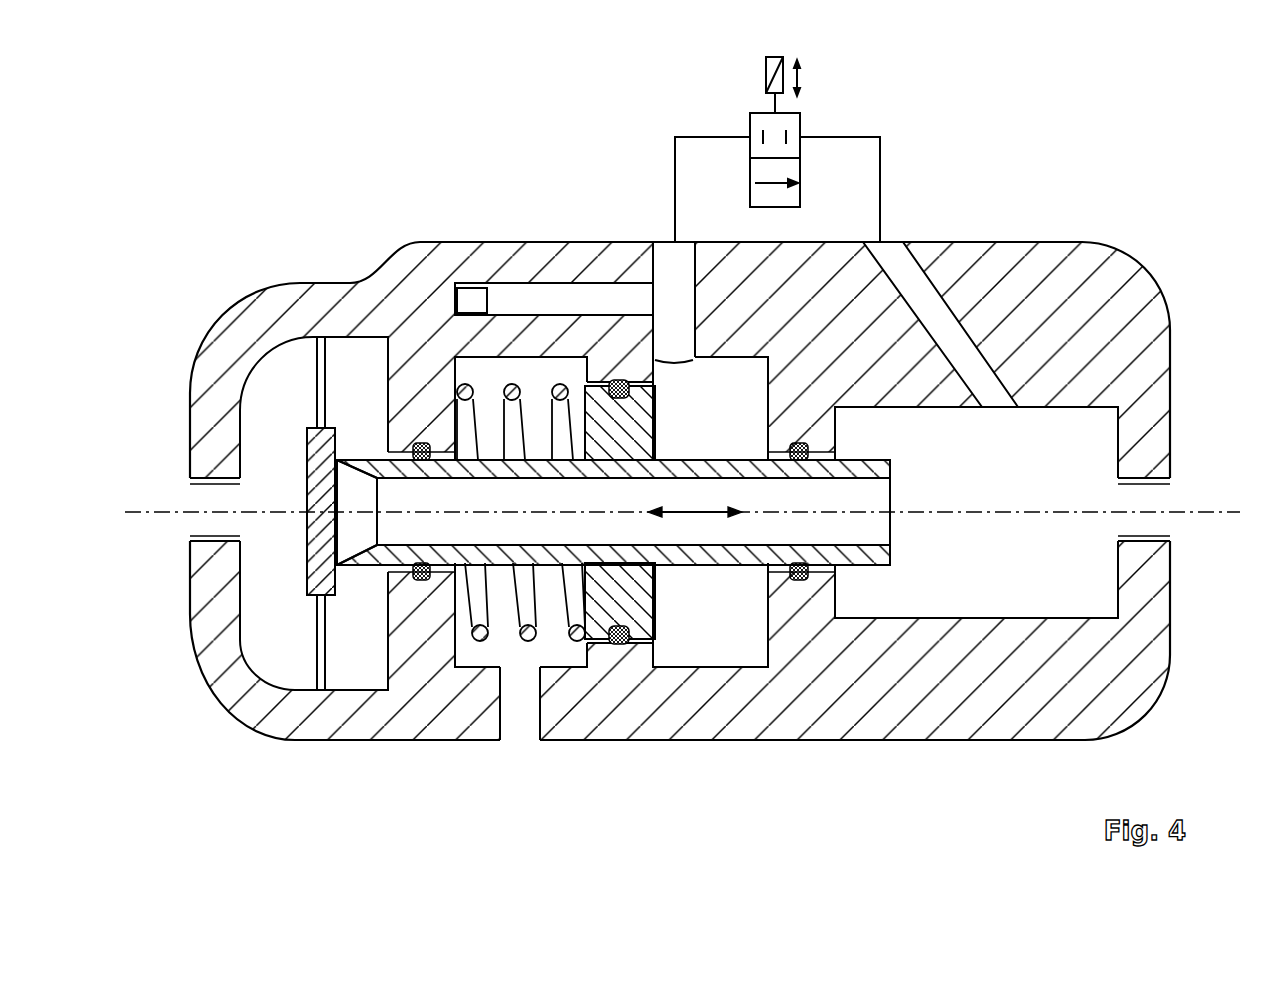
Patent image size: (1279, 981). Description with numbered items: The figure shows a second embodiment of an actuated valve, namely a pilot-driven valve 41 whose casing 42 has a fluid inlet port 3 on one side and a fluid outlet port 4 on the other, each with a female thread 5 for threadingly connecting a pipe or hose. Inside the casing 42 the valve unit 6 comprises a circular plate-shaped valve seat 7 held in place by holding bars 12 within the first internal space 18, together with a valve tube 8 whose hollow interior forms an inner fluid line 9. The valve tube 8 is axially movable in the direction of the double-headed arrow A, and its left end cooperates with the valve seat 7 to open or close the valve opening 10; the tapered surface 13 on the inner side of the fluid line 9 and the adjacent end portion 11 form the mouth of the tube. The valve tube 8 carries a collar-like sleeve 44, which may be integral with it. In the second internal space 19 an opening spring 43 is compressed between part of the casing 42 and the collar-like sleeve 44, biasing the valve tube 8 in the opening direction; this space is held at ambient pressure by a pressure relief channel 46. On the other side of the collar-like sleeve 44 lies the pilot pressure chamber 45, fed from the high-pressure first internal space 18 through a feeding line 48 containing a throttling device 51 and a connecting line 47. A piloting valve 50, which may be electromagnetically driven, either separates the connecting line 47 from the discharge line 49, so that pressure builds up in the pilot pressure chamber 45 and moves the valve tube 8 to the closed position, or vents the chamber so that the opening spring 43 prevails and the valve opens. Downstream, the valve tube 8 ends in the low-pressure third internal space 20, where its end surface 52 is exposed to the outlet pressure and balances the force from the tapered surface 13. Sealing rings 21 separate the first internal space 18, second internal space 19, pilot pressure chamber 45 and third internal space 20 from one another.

The fluid inlet port 3 is at (195, 500).
The fluid outlet port 4 is at (1165, 500).
The female thread 5 is at (1165, 525).
The valve unit 6 is at (293, 455).
The valve seat 7 is at (300, 453).
The valve tube 8 is at (853, 579).
The inner fluid line 9 is at (830, 503).
The valve opening 10 is at (349, 432).
The upper conical surface 11 is at (372, 547).
The holding bars 12 is at (322, 375).
The tapered surface 13 is at (354, 566).
The first internal space 18 is at (265, 628).
The second internal space 19 is at (555, 640).
The third internal space 20 is at (1017, 573).
The sealing rings 21 is at (800, 580).
The pilot-driven valve 41 is at (1150, 238).
The casing 42 is at (1063, 238).
The opening spring 43 is at (472, 600).
The collar-like sleeve 44 is at (647, 612).
The pilot pressure chamber 45 is at (693, 423).
The pressure relief channel 46 is at (520, 722).
The connecting line 47 is at (662, 265).
The feeding line 48 is at (555, 302).
The discharge line 49 is at (920, 285).
The piloting valve 50 is at (802, 128).
The throttling device 51 is at (470, 300).
The end surface 52 is at (902, 463).
The double-headed arrow A is at (697, 517).